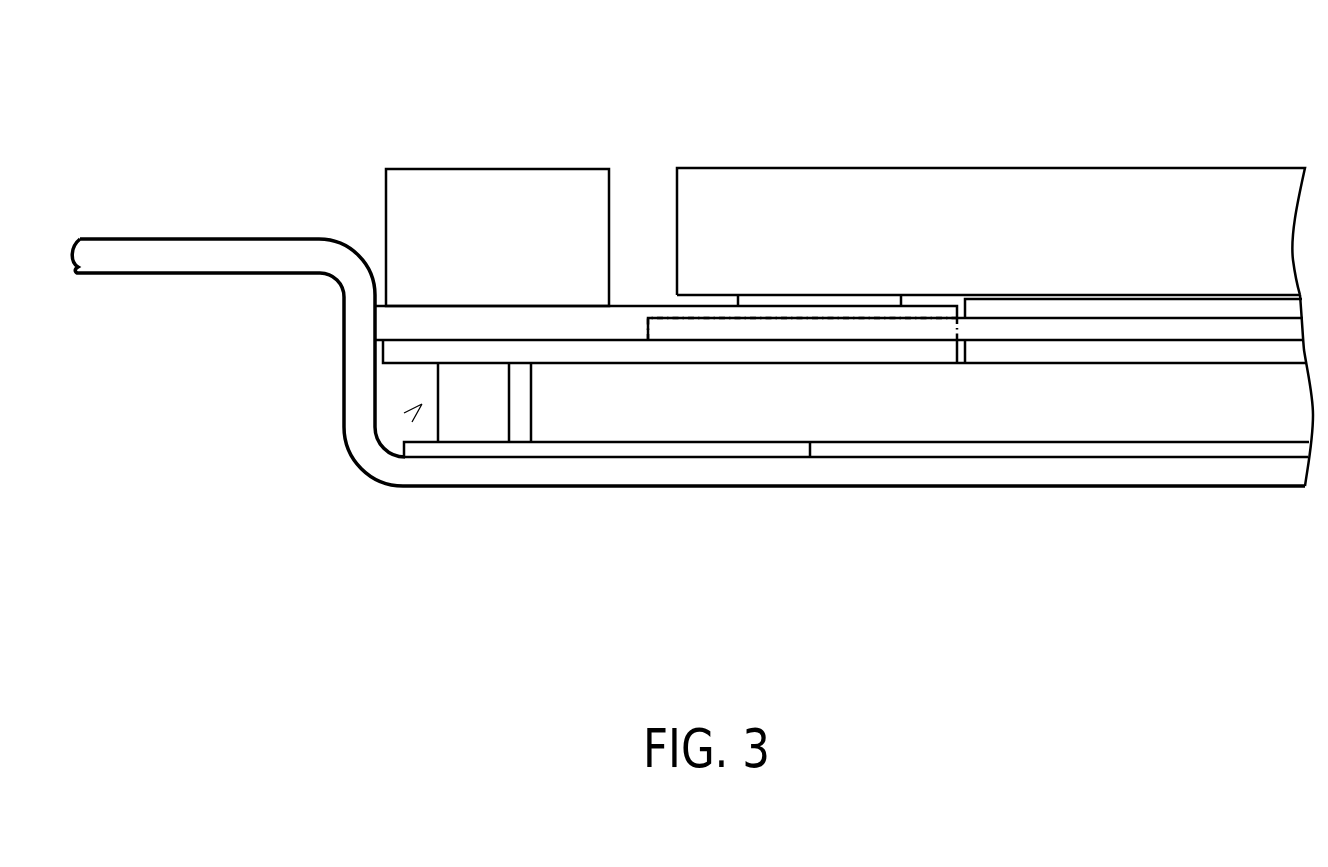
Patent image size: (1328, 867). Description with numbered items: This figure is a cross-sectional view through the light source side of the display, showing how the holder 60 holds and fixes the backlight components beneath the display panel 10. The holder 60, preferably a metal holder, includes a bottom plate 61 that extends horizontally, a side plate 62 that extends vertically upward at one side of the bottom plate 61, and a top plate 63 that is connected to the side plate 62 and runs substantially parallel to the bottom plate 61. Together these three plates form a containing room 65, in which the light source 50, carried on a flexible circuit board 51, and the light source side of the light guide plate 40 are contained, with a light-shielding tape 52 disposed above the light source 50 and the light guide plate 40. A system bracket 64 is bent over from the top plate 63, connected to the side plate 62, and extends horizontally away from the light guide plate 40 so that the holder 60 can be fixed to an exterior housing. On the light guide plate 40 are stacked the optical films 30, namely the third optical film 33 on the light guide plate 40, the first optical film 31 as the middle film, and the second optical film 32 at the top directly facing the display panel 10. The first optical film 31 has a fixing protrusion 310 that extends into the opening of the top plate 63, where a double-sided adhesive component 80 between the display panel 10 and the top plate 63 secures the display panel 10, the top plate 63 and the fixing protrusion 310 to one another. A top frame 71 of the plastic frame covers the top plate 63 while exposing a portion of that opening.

The display panel 10 is at (932, 228).
The optical films 30 is at (1131, 199).
The first optical film 31 is at (1097, 330).
The second optical film 32 is at (1013, 305).
The third optical film 33 is at (1190, 348).
The fixing protrusion 310 is at (687, 327).
The light guide plate 40 is at (1090, 405).
The light source 50 is at (478, 413).
The flexible circuit board 51 is at (640, 452).
The light-shielding tape 52 is at (716, 350).
The holder 60 is at (688, 468).
The bottom plate 61 is at (433, 472).
The side plate 62 is at (353, 353).
The top plate 63 is at (567, 325).
The system bracket 64 is at (180, 257).
The containing room 65 is at (392, 489).
The top frame 71 is at (539, 187).
The double-sided adhesive component 80 is at (863, 300).